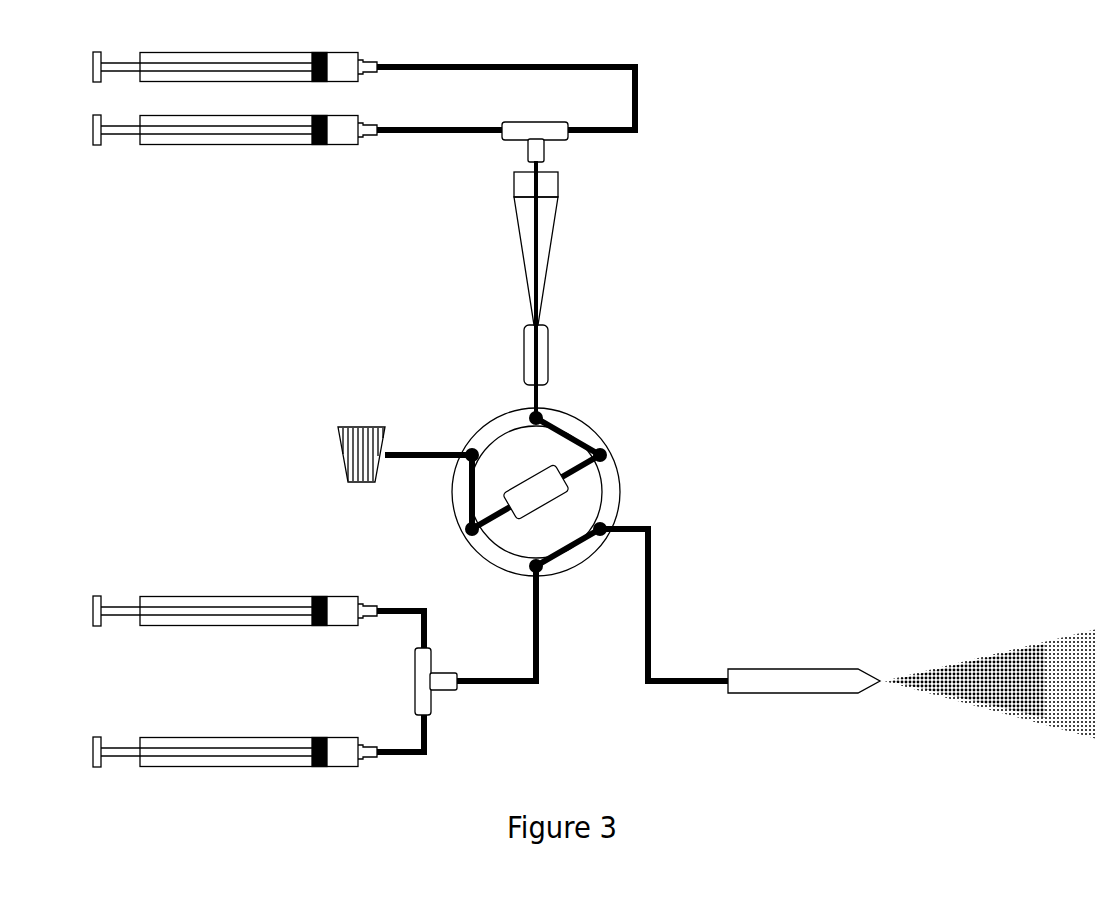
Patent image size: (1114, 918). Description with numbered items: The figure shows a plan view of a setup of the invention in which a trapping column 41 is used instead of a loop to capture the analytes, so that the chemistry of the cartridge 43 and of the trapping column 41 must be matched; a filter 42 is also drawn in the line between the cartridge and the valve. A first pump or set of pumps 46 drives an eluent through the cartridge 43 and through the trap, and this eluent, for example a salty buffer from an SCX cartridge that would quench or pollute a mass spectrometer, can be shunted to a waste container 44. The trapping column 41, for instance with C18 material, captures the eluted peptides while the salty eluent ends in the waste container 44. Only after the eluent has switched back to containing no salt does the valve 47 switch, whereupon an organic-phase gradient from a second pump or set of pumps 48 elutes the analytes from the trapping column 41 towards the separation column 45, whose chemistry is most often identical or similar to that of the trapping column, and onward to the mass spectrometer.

The trapping column 41 is at (590, 488).
The filter 42 is at (557, 355).
The cartridge 43 is at (561, 248).
The waste container 44 is at (377, 457).
The separation column 45 is at (848, 634).
The first pump or set of pumps 46 is at (364, 107).
The valve 47 is at (543, 490).
The second pump or set of pumps 48 is at (314, 666).